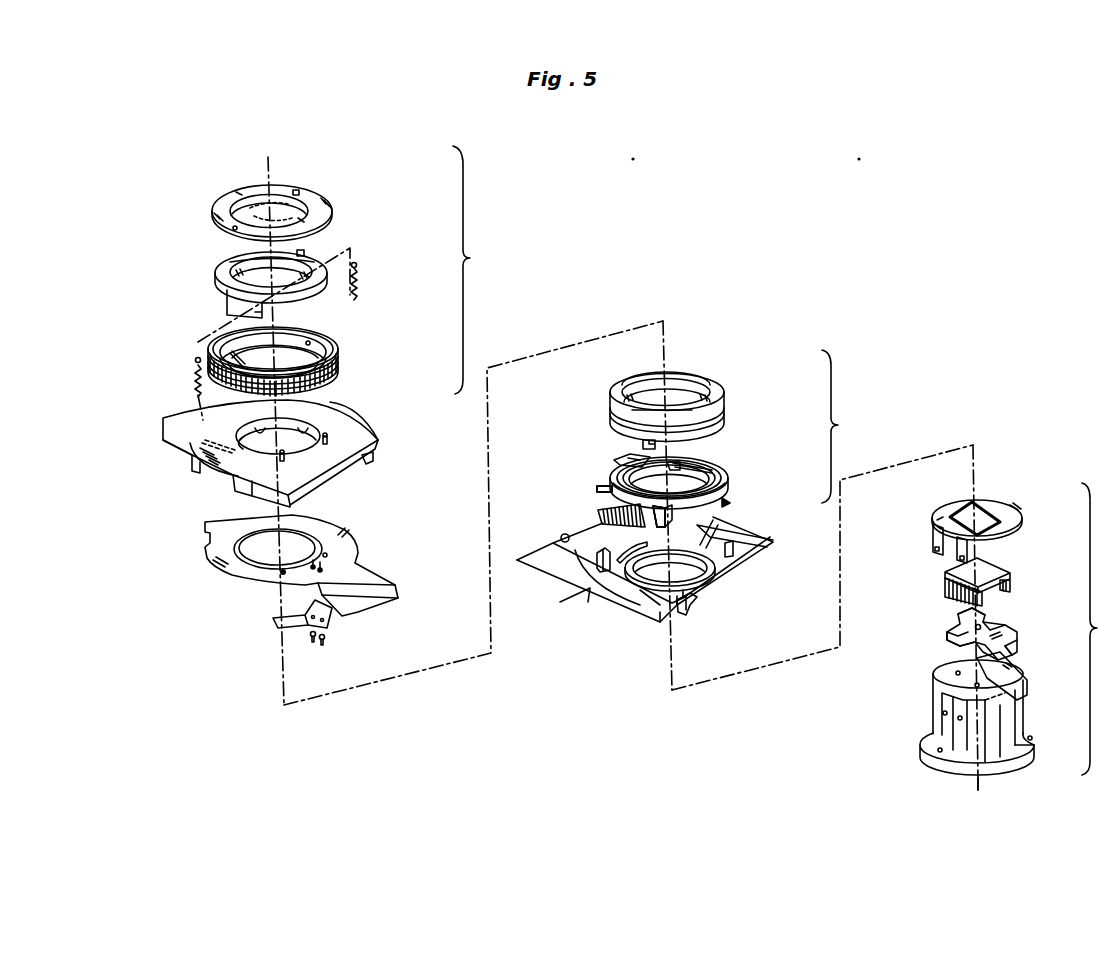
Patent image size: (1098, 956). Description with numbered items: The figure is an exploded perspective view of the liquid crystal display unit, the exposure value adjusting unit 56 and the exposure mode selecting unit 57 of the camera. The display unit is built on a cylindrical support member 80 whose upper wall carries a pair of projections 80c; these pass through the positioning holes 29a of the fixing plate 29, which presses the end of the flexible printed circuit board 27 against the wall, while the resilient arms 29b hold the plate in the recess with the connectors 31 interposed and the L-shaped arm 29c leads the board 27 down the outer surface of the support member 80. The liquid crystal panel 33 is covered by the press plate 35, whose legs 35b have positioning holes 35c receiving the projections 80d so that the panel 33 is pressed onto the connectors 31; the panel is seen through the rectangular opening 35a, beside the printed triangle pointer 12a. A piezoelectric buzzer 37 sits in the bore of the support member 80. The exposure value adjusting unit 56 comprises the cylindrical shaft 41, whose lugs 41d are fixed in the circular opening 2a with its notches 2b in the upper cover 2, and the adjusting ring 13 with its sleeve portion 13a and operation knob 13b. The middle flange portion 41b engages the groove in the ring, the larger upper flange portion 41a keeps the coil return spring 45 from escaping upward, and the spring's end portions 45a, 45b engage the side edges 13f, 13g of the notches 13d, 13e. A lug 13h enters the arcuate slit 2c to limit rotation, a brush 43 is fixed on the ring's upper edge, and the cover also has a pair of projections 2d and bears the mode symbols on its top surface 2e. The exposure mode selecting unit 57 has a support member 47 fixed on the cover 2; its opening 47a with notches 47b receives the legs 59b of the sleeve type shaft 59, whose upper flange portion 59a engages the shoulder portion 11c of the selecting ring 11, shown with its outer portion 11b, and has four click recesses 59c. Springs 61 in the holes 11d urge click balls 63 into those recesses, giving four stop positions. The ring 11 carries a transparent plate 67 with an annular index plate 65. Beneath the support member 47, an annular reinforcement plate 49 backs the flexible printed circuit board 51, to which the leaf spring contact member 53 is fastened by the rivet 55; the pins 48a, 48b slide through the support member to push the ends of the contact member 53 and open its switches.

The upper cover 2 is at (773, 540).
The circular opening 2a is at (690, 577).
The notches 2b is at (645, 592).
The arcuate slit 2c is at (622, 548).
The projections 2d is at (600, 555).
The top surface 2e is at (561, 538).
The exposure mode selecting ring 11 is at (337, 360).
The knurled portion 11b is at (328, 378).
The shoulder portion 11c is at (320, 348).
The holes 11d is at (307, 340).
The pointer 12a is at (940, 520).
The adjusting ring 13 is at (730, 503).
The sleeve portion 13a is at (707, 478).
The operation knob 13b is at (604, 510).
The notch 13d is at (600, 486).
The side edge 13f is at (604, 489).
The notch 13e is at (683, 572).
The side edge 13g is at (659, 516).
The lug 13h is at (680, 467).
The flexible printed circuit board 27 is at (1007, 757).
The fixing plate 29 is at (1007, 642).
The positioning holes 29a is at (950, 640).
The resilient arms 29b is at (993, 622).
The L-shaped arm 29c is at (1010, 652).
The connectors 31 is at (948, 593).
The liquid crystal panel 33 is at (1012, 580).
The press plate 35 is at (1017, 515).
The rectangular opening 35a is at (987, 505).
The legs 35b is at (937, 550).
The positioning holes 35c is at (936, 550).
The piezoelectric buzzer 37 is at (977, 787).
The cylindrical shaft 41 is at (731, 385).
The upper flange portion 41a is at (685, 372).
The middle flange portion 41b is at (675, 463).
The lugs 41d is at (643, 445).
The brush 43 is at (630, 455).
The return spring 45 is at (680, 465).
The end portion 45a is at (603, 488).
The end portion 45b is at (730, 552).
The support member 47 is at (378, 440).
The opening 47a is at (243, 433).
The notches 47b is at (333, 417).
The pin 48a is at (237, 477).
The pin 48b is at (337, 437).
The annular reinforcement plate 49 is at (337, 537).
The flexible printed circuit board 51 is at (373, 580).
The contact member 53 is at (327, 618).
The rivet 55 is at (324, 640).
The exposure value adjusting unit 56 is at (846, 426).
The exposure mode selecting unit 57 is at (479, 270).
The sleeve type shaft 59 is at (217, 282).
The upper flange portion 59a is at (220, 268).
The legs 59b is at (224, 296).
The click recesses 59c is at (303, 255).
The springs 61 is at (358, 285).
The click balls 63 is at (357, 263).
The annular index plate 65 is at (327, 202).
The transparent plate 67 is at (300, 210).
The cylindrical support member 80 is at (1017, 673).
The projections 80c is at (977, 685).
The projections 80d is at (960, 718).